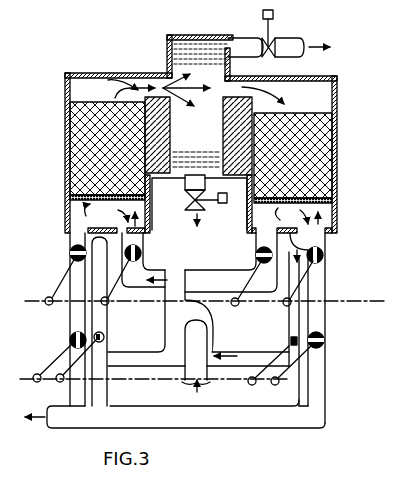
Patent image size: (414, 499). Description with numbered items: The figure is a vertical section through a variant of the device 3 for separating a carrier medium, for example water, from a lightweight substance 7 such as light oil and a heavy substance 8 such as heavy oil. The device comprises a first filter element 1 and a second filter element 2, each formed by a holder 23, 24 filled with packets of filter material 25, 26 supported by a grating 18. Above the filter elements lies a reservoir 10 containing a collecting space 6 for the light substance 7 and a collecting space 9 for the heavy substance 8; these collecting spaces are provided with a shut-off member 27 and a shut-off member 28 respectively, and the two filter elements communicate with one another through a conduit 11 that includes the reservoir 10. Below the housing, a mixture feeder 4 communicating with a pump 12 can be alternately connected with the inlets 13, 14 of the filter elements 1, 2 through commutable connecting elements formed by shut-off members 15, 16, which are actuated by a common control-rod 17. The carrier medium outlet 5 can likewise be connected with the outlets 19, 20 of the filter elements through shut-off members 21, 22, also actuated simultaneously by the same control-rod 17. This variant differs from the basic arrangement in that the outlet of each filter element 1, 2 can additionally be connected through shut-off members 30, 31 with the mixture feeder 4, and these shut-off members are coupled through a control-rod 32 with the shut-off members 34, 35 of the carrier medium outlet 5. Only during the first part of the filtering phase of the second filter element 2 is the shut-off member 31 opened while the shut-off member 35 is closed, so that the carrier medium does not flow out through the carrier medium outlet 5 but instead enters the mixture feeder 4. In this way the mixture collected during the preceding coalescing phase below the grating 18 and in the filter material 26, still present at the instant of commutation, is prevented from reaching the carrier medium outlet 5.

The first filter element 1 is at (75, 152).
The second filter element 2 is at (318, 150).
The device 3 is at (107, 58).
The mixture feeder 4 is at (168, 302).
The carrier medium outlet 5 is at (60, 406).
The collecting space for the light substance 6 is at (184, 36).
The lightweight substance 7 is at (206, 40).
The heavy substance 8 is at (189, 205).
The collecting space for the heavy substance 9 is at (180, 190).
The reservoir 10 is at (198, 136).
The conduit 11 is at (158, 85).
The pump 12 is at (172, 338).
The inlet of the first filter element 13 is at (143, 236).
The inlet of the second filter element 14 is at (256, 236).
The shut-off member 15 is at (141, 255).
The shut-off member 16 is at (256, 256).
The control-rod 17 is at (46, 305).
The grating 18 is at (120, 203).
The outlet of the first filter element 19 is at (70, 232).
The outlet of the second filter element 20 is at (326, 236).
The shut-off member 21 is at (69, 254).
The shut-off member 22 is at (324, 258).
The holder 23 is at (66, 92).
The holder 24 is at (335, 108).
The filter material 25 is at (90, 113).
The filter material 26 is at (300, 125).
The shut-off member 27 is at (264, 38).
The shut-off member 28 is at (192, 204).
The shut-off member 30 is at (105, 338).
The shut-off member 31 is at (290, 341).
The control-rod 32 is at (36, 383).
The shut-off member 34 is at (70, 341).
The shut-off member 35 is at (325, 341).